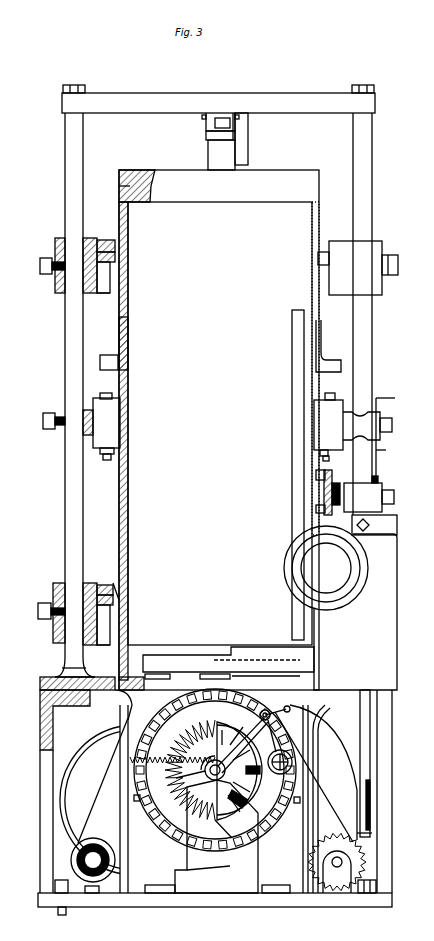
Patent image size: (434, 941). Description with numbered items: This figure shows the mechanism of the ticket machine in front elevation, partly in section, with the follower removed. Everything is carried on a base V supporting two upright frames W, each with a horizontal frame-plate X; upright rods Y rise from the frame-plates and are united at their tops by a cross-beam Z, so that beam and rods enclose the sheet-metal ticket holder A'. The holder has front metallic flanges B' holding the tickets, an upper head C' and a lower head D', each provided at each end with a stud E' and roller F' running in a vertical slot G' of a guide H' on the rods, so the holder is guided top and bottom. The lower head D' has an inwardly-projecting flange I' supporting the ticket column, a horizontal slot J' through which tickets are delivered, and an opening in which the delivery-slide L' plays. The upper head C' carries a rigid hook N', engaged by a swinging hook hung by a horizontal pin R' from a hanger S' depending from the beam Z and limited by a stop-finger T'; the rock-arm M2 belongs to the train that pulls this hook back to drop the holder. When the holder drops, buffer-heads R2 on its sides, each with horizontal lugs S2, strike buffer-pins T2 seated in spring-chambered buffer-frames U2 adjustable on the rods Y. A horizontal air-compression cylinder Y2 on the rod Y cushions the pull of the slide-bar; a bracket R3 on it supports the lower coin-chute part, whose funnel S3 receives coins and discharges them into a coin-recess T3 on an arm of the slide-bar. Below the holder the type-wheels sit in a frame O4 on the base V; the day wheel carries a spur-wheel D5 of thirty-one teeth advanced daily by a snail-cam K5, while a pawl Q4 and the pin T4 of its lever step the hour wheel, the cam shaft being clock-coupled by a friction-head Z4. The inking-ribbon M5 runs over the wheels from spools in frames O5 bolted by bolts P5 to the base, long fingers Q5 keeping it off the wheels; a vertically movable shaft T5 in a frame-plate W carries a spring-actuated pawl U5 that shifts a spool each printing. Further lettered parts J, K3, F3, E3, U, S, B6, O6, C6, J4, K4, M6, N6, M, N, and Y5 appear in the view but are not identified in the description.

The cross-beam Z is at (180, 94).
The left standard J is at (75, 395).
The upright rod Y is at (362, 314).
The stop-finger T' is at (210, 127).
The horizontal pin R' is at (208, 128).
The hanger S' is at (233, 132).
The rigid hook N' is at (221, 155).
The ticket holder A' is at (219, 430).
The upper head C' is at (117, 184).
The metallic flange B' is at (294, 475).
The guide H' is at (215, 441).
The stud E' is at (106, 413).
The roller F' is at (218, 432).
The vertical slot G' is at (108, 469).
The lower head D' is at (111, 622).
The buffer-head R2 is at (119, 335).
The horizontal lug S2 is at (221, 357).
The buffer-pin T2 is at (104, 393).
The buffer-frame U2 is at (217, 429).
The funnel S3 is at (391, 400).
The coin-recess T3 is at (386, 452).
The bracket R3 is at (380, 483).
The stem K3 is at (336, 489).
The lug F3 is at (316, 478).
The lug E3 is at (316, 510).
The friction-head Z4 is at (369, 497).
The air-compression cylinder Y2 is at (390, 520).
The drum U is at (326, 568).
The housing S is at (355, 612).
The delivery-slide L' is at (228, 663).
The horizontal slot J' is at (285, 670).
The inwardly-projecting flange I' is at (210, 682).
The frame-plate X is at (40, 687).
The upright frame W is at (40, 769).
The base V is at (215, 903).
The large pulley B6 is at (94, 799).
The inking-ribbon M5 is at (108, 785).
The long finger Q5 is at (120, 820).
The snail-cam K5 is at (74, 853).
The bolt P5 is at (55, 885).
The foot O6 is at (92, 894).
The frame O4 is at (165, 886).
The spool frame O5 is at (362, 895).
The chain wheel C6 is at (213, 770).
The spur-wheel D5 is at (205, 768).
The rock-arm M2 is at (187, 782).
The sector plate J4 is at (231, 771).
The arm K4 is at (216, 823).
The pawl Q4 is at (254, 739).
The pin T4 is at (271, 752).
The bracket plate M6 is at (216, 836).
The plate foot N6 is at (213, 874).
The belt M is at (330, 787).
The shaft T5 is at (370, 752).
The spring-actuated pawl U5 is at (372, 833).
The gear wheel N is at (361, 863).
The gear Y5 is at (366, 855).